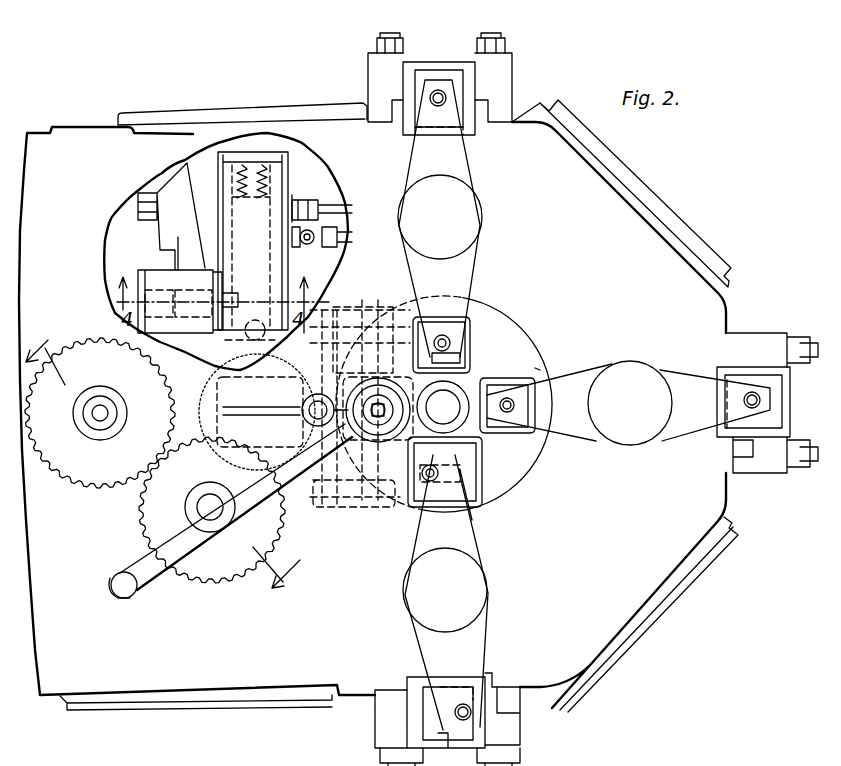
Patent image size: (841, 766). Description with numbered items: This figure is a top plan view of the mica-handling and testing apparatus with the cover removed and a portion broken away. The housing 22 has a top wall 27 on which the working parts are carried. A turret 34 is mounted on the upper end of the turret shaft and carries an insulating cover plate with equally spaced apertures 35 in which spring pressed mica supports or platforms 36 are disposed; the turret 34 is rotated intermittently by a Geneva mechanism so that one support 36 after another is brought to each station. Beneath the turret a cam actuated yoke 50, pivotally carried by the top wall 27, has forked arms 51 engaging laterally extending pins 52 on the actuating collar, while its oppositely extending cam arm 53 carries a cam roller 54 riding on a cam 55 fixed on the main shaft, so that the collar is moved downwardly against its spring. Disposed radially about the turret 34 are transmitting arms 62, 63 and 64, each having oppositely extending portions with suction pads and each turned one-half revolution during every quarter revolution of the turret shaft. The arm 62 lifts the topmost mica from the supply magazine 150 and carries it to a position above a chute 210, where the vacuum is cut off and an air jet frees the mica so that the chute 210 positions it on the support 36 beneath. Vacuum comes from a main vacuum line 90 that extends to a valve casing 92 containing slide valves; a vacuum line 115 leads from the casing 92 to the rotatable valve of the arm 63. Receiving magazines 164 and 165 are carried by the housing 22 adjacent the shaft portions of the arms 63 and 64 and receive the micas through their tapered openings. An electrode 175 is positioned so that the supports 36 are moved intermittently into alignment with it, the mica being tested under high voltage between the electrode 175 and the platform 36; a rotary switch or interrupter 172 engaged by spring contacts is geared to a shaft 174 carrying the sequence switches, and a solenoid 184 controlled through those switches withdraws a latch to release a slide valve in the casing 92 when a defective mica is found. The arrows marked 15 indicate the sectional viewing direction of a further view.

The section line 15- 15 is at (167, 454).
The housing 22 is at (633, 203).
The top wall 27 is at (658, 549).
The turret 34 is at (537, 368).
The apertures 35 is at (507, 383).
The mica supports or platforms 36 is at (460, 357).
The cam actuated yoke 50 is at (333, 513).
The forked arms 51 is at (403, 300).
The laterally extending pins 52 is at (443, 317).
The cam arm 53 is at (233, 357).
The cam roller 54 is at (217, 373).
The cam 55 is at (212, 510).
The transmitting arm 62 is at (470, 633).
The transmitting arm 63 is at (475, 172).
The transmitting arm 64 is at (680, 423).
The main vacuum line 90 is at (322, 207).
The valve casing 92 is at (277, 273).
The vacuum line 115 is at (322, 204).
The supply magazine 150 is at (410, 723).
The receiving magazine 164 is at (432, 68).
The receiving magazine 165 is at (783, 333).
The rotary switch or interrupter 172 is at (100, 415).
The shaft 174 is at (175, 532).
The electrode 175 is at (378, 408).
The solenoid 184 is at (153, 277).
The chute 210 is at (466, 512).